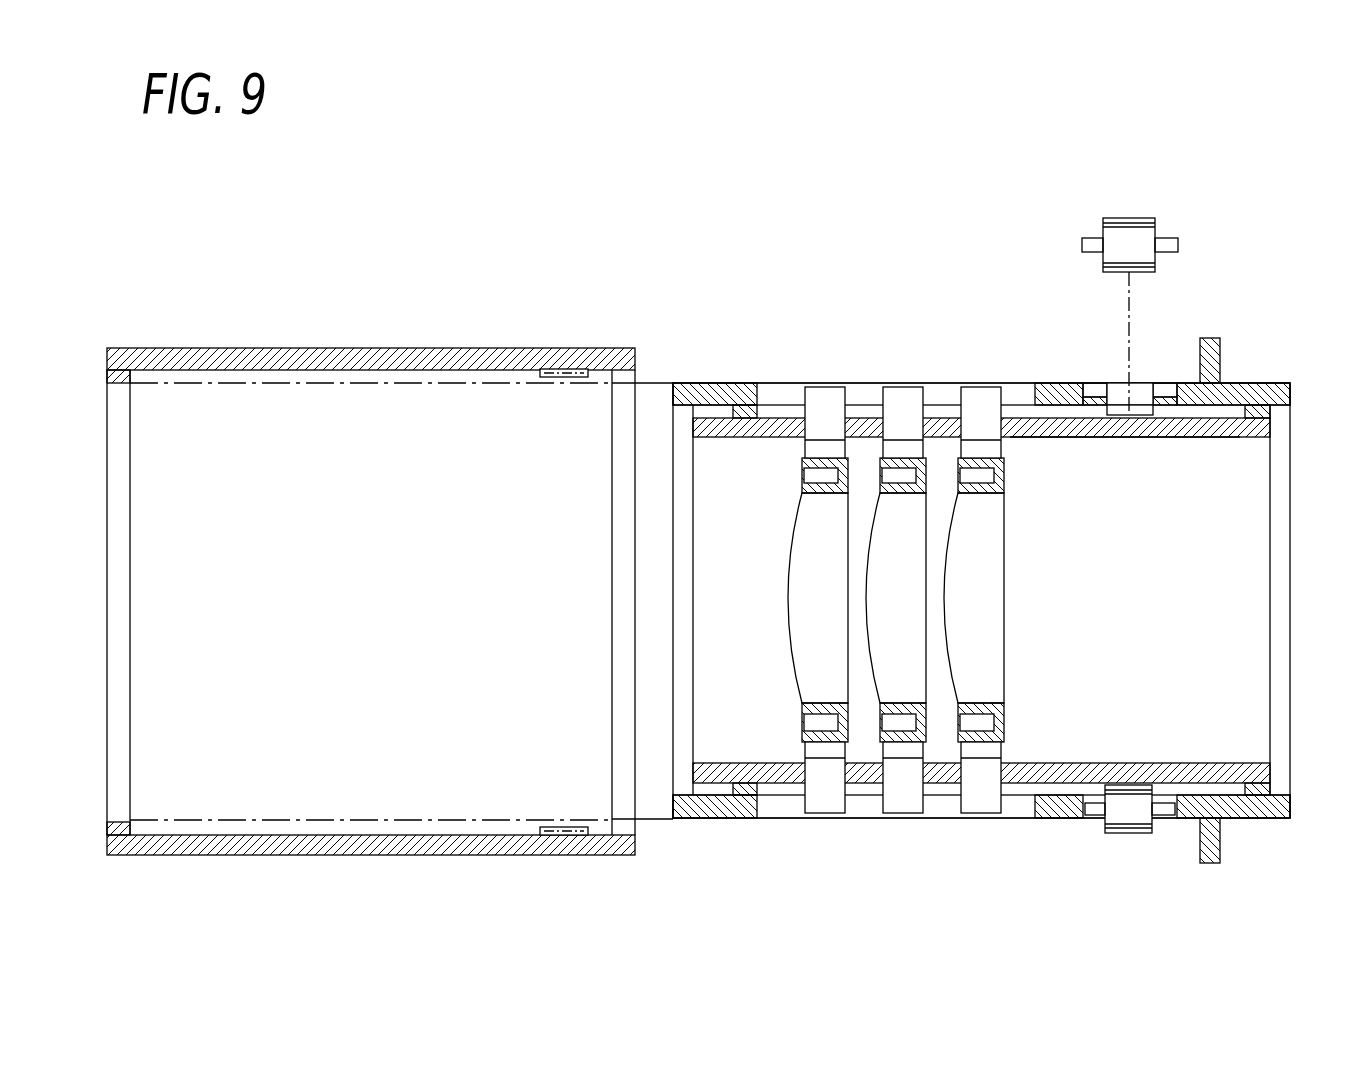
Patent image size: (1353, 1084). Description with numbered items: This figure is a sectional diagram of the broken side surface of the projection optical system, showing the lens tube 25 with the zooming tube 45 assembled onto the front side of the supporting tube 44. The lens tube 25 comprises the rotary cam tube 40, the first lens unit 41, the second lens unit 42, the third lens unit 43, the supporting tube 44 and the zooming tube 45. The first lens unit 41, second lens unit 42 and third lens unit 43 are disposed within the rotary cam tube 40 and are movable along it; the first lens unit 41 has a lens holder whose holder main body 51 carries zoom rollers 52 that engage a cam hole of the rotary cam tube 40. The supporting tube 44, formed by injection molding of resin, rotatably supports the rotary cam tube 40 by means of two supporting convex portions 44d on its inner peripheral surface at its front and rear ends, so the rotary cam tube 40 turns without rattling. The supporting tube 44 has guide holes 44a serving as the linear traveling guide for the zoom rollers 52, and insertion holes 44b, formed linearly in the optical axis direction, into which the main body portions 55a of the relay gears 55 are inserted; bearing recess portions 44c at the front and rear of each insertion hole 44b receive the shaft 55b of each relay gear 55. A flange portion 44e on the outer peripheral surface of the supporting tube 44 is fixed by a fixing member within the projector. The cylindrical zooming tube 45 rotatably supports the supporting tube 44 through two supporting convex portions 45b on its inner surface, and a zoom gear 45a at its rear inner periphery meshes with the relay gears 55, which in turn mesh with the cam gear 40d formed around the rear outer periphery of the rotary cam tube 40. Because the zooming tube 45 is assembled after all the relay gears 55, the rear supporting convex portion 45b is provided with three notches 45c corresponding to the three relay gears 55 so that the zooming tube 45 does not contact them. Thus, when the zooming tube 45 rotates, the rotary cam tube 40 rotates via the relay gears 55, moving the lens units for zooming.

The lens tube 25 is at (605, 255).
The rotary cam tube 40 is at (693, 428).
The cam gear 40d is at (1080, 440).
The first lens unit 41 is at (788, 613).
The second lens unit 42 is at (930, 568).
The third lens unit 43 is at (1012, 632).
The supporting tube 44 is at (735, 372).
The guide hole 44a is at (776, 395).
The insertion hole 44b is at (1140, 385).
The bearing recess portion 44c is at (1095, 387).
The supporting convex portion 44d is at (714, 440).
The flange portion 44e is at (1220, 352).
The zooming tube 45 is at (350, 338).
The zoom gear 45a is at (555, 378).
The supporting convex portion 45b is at (130, 383).
The notch 45c is at (623, 377).
The holder main body 51 is at (805, 712).
The zoom roller 52 is at (828, 400).
The relay gear 55 is at (1127, 215).
The main body portion 55a is at (1140, 232).
The shaft 55b is at (1093, 243).